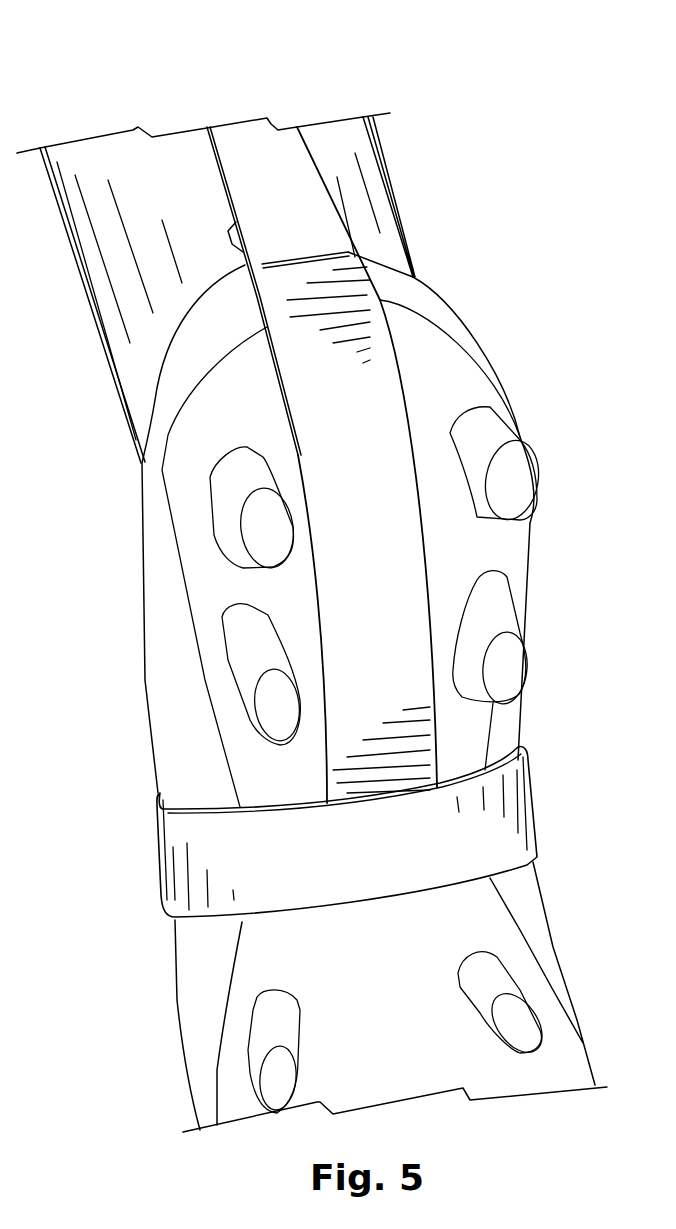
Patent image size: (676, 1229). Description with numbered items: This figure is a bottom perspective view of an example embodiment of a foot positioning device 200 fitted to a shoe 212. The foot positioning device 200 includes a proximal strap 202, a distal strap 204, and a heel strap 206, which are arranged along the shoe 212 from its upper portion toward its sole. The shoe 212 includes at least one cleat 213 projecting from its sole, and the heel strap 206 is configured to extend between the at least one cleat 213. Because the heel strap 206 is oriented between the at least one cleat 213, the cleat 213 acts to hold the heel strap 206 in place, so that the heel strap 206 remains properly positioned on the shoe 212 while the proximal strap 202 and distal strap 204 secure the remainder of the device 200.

The foot positioning device 200 is at (137, 100).
The proximal strap 202 is at (127, 268).
The distal strap 204 is at (203, 852).
The heel strap 206 is at (345, 302).
The shoe 212 is at (193, 452).
The cleat 213 is at (263, 540).